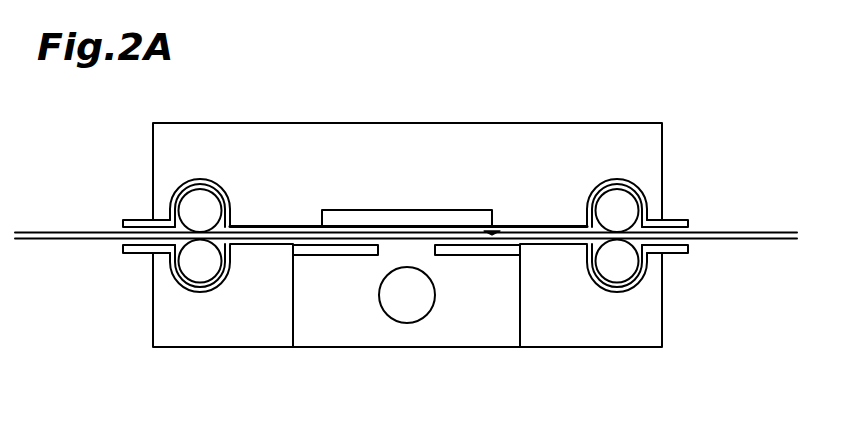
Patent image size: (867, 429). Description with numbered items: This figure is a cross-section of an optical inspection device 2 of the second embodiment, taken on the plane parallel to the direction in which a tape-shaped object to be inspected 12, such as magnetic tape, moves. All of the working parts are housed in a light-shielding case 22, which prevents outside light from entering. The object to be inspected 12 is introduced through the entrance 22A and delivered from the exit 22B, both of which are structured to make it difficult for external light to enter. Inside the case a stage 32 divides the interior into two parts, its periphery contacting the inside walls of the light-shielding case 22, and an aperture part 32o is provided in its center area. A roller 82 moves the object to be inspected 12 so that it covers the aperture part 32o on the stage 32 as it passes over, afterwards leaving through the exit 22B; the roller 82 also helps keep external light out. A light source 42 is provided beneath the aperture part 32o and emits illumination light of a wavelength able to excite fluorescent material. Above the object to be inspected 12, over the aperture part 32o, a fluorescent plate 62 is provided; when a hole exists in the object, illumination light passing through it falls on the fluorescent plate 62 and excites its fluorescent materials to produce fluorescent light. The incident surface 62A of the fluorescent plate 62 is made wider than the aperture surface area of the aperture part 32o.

The optical inspection device 2 is at (570, 76).
The object to be inspected 12 is at (727, 234).
The light-shielding case 22 is at (372, 129).
The entrance 22A is at (672, 253).
The exit 22B is at (125, 249).
The stage 32 is at (334, 256).
The aperture part 32o is at (397, 252).
The light source 42 is at (407, 323).
The fluorescent plate 62 is at (447, 208).
The incident surface 62A is at (495, 231).
The roller 82 is at (182, 206).